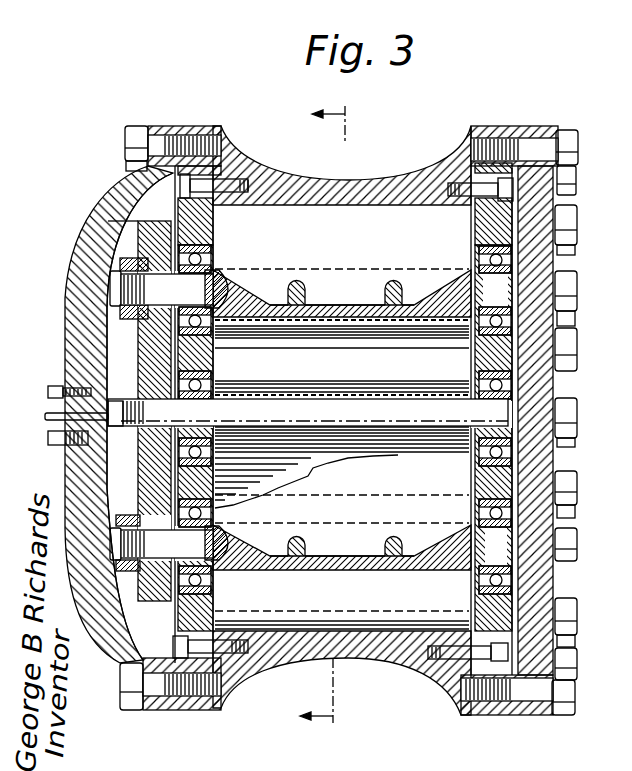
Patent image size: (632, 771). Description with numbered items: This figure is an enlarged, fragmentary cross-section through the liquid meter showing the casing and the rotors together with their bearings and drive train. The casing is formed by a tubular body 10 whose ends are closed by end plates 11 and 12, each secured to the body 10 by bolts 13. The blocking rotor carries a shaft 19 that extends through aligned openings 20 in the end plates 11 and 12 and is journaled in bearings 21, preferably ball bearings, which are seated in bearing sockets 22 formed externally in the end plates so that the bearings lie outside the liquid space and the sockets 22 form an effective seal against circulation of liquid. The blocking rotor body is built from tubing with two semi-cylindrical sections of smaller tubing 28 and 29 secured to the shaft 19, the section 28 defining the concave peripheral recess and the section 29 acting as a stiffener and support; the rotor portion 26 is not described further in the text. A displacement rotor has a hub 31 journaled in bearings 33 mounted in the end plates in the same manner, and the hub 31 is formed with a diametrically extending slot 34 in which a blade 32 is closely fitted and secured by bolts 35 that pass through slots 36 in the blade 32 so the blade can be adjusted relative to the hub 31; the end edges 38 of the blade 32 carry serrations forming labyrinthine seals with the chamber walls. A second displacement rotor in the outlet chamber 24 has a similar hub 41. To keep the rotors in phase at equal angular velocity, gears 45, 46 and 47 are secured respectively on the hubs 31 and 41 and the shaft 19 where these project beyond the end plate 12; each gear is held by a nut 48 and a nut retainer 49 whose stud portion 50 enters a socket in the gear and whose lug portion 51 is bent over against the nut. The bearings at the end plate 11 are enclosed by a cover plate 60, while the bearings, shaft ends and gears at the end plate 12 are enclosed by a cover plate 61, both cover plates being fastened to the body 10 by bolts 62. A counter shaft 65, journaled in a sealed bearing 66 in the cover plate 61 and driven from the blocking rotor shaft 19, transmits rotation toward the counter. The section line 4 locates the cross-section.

The section line 4- 4 is at (336, 416).
The body 10 is at (270, 165).
The end plate 11 is at (493, 218).
The end plate 12 is at (173, 205).
The bolts 13 is at (172, 178).
The shaft 19 is at (333, 400).
The openings 20 is at (205, 400).
The bearings 21 is at (160, 366).
The bearing sockets 22 is at (167, 452).
The outlet chamber 24 is at (320, 593).
The drum cylinder 26 is at (300, 320).
The semi-cylindrical section of smaller tubing 28 is at (373, 440).
The semi-cylindrical section of smaller tubing 29 is at (393, 383).
The hub 31 is at (180, 278).
The blade 32 is at (383, 210).
The bearings 33 is at (140, 240).
The slot 34 is at (233, 290).
The bolts 35 is at (291, 280).
The slots 36 is at (298, 288).
The end edges 38 is at (133, 227).
The hub 41 is at (452, 558).
The gear 45 is at (110, 330).
The gear 46 is at (137, 597).
The gear 47 is at (100, 375).
The nut 48 is at (112, 258).
The nut retainer 49 is at (112, 303).
The stud portion 50 is at (135, 525).
The lug portion 51 is at (110, 565).
The cover plate 60 is at (527, 320).
The cover plate 61 is at (125, 195).
The bolts 62 is at (122, 133).
The counter shaft 65 is at (40, 384).
The sealed bearing 66 is at (87, 430).